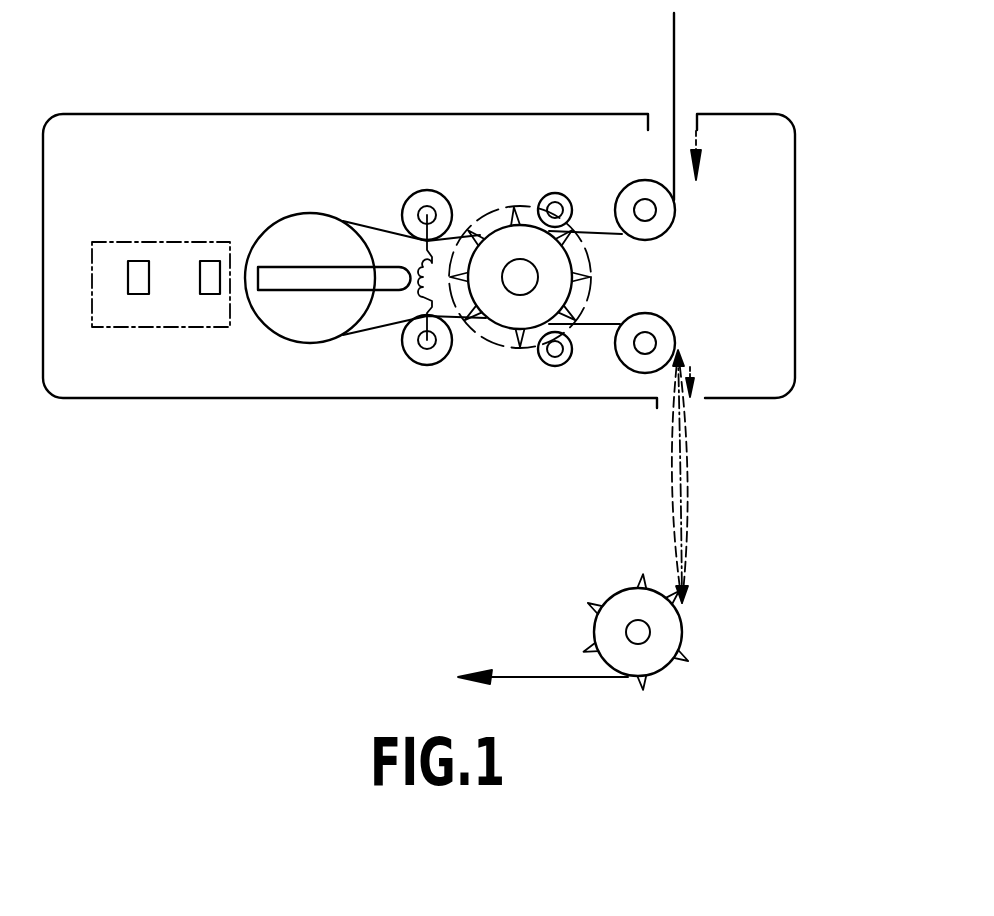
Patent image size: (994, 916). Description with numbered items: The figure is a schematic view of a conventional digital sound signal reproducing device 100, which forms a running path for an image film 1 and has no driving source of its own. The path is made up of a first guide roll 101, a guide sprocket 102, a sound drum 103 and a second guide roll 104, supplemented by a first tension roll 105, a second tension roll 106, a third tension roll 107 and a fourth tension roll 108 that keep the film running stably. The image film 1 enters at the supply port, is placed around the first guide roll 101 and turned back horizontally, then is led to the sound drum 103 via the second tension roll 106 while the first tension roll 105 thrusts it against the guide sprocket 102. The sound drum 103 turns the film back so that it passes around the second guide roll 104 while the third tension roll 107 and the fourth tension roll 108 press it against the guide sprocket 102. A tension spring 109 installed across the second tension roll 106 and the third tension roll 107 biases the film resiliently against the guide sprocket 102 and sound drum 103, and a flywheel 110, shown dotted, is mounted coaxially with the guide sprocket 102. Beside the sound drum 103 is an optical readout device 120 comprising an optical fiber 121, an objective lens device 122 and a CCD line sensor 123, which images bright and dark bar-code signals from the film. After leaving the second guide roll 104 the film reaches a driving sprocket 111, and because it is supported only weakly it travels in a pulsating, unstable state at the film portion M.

The image film 1 is at (675, 59).
The digital sound signal reproducing device 100 is at (890, 251).
The first guide roll 101 is at (668, 210).
The guide sprocket 102 is at (507, 243).
The sound drum 103 is at (315, 214).
The second guide roll 104 is at (668, 340).
The first tension roll 105 is at (558, 195).
The second tension roll 106 is at (426, 190).
The third tension roll 107 is at (427, 365).
The fourth tension roll 108 is at (555, 367).
The tension spring 109 is at (418, 293).
The flywheel 110 is at (526, 205).
The driving sprocket 111 is at (682, 627).
The optical readout device 120 is at (187, 203).
The optical fiber 121 is at (283, 289).
The objective lens device 122 is at (207, 294).
The CCD line sensor 123 is at (137, 294).
The film portion M is at (728, 494).